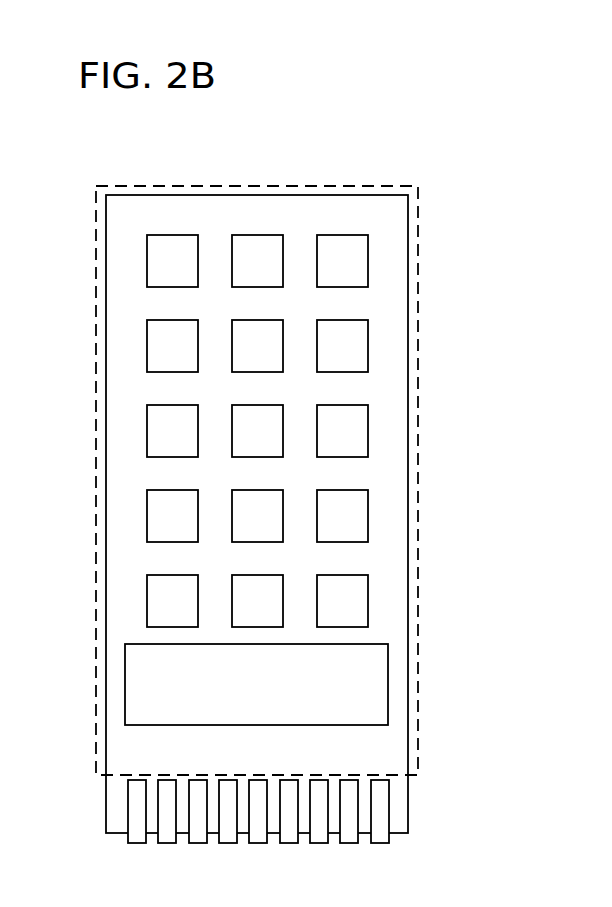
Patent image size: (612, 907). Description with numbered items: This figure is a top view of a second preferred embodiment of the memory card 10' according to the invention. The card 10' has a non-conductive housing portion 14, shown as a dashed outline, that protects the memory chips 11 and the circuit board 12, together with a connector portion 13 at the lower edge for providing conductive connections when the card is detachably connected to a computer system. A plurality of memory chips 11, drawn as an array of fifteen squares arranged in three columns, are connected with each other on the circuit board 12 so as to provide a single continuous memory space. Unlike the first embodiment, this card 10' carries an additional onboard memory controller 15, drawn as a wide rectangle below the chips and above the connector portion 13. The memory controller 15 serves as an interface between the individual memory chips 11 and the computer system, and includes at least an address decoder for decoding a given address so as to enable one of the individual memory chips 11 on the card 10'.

The memory card 10' is at (252, 474).
The memory chips 11 is at (170, 260).
The circuit board 12 is at (350, 213).
The connector portion 13 is at (135, 815).
The non-conductive housing portion 14 is at (98, 190).
The memory controller 15 is at (140, 704).